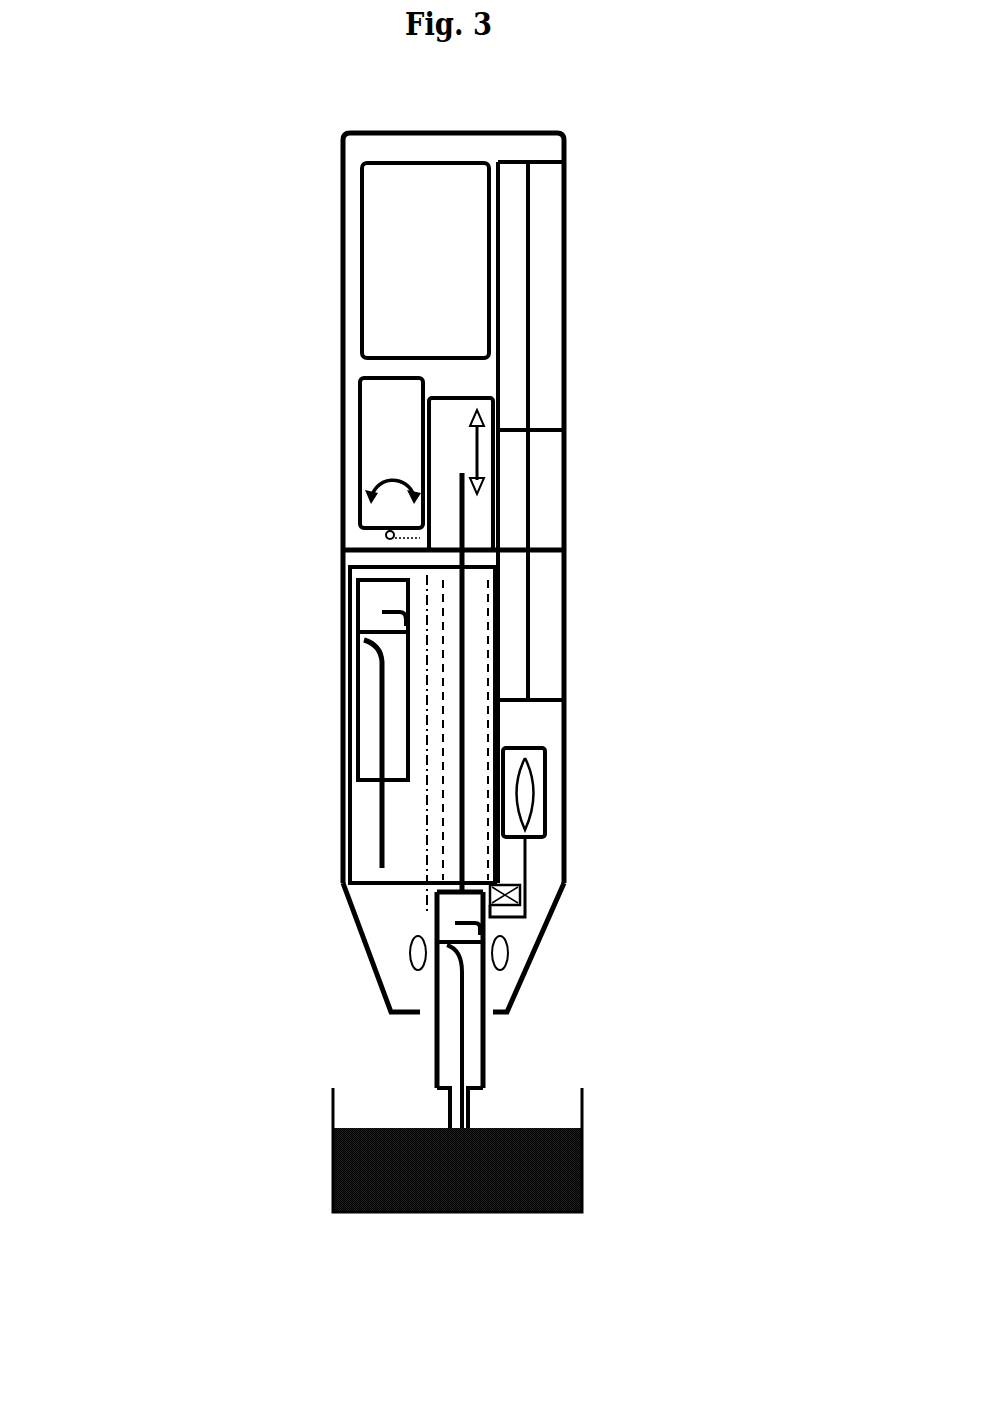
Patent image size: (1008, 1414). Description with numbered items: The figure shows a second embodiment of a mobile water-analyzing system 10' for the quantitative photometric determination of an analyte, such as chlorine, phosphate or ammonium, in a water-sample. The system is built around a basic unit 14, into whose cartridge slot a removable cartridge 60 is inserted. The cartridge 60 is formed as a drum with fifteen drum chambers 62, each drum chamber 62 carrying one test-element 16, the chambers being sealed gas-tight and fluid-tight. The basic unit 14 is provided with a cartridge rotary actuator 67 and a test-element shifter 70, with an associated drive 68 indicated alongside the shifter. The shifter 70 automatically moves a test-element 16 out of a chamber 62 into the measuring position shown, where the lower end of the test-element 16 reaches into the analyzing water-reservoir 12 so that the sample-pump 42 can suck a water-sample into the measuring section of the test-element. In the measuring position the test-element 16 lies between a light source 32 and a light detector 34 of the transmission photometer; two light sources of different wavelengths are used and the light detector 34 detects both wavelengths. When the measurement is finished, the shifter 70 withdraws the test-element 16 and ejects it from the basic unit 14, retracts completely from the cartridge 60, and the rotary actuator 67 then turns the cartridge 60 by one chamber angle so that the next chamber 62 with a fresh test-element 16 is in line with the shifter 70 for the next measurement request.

The mobile water-analyzing system 10' is at (728, 161).
The analyzing water-reservoir 12 is at (458, 1163).
The basic unit 14 is at (574, 442).
The test-element 16 is at (373, 702).
The light source 32 is at (410, 955).
The light detector 34 is at (508, 955).
The sample-pump 42 is at (528, 797).
The removable cartridge 60 is at (346, 655).
The drum chamber 62 is at (473, 675).
The cartridge rotary actuator 67 is at (380, 418).
The linear drive 68 is at (457, 417).
The test-element shifter 70 is at (502, 888).